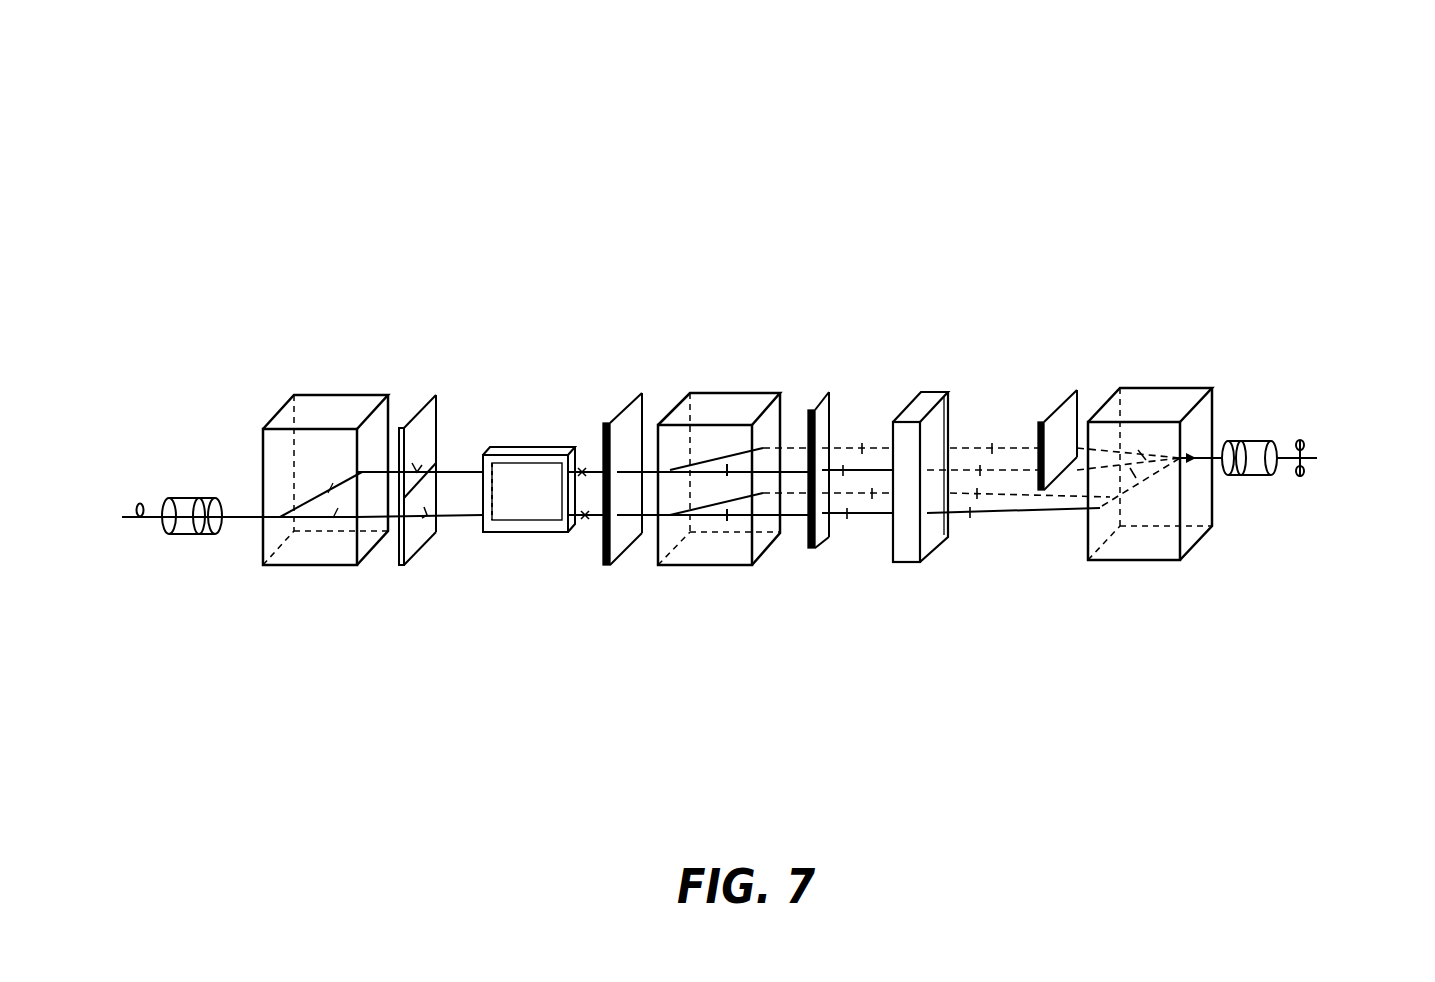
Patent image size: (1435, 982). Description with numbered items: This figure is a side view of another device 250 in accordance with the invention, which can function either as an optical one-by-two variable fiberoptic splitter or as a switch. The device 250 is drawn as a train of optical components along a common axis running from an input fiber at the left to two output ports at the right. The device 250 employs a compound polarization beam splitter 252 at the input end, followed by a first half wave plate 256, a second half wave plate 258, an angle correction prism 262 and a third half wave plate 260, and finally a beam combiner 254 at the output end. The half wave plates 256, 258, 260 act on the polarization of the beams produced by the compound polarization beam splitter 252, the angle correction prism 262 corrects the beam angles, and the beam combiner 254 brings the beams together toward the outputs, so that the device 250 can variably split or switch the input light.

The device 250 is at (669, 160).
The compound polarization beam splitter 252 is at (344, 346).
The beam combiner 254 is at (1124, 341).
The half wave plate 256 is at (619, 400).
The half wave plate 258 is at (818, 400).
The half wave plate 260 is at (1050, 410).
The angle correction prism 262 is at (937, 392).